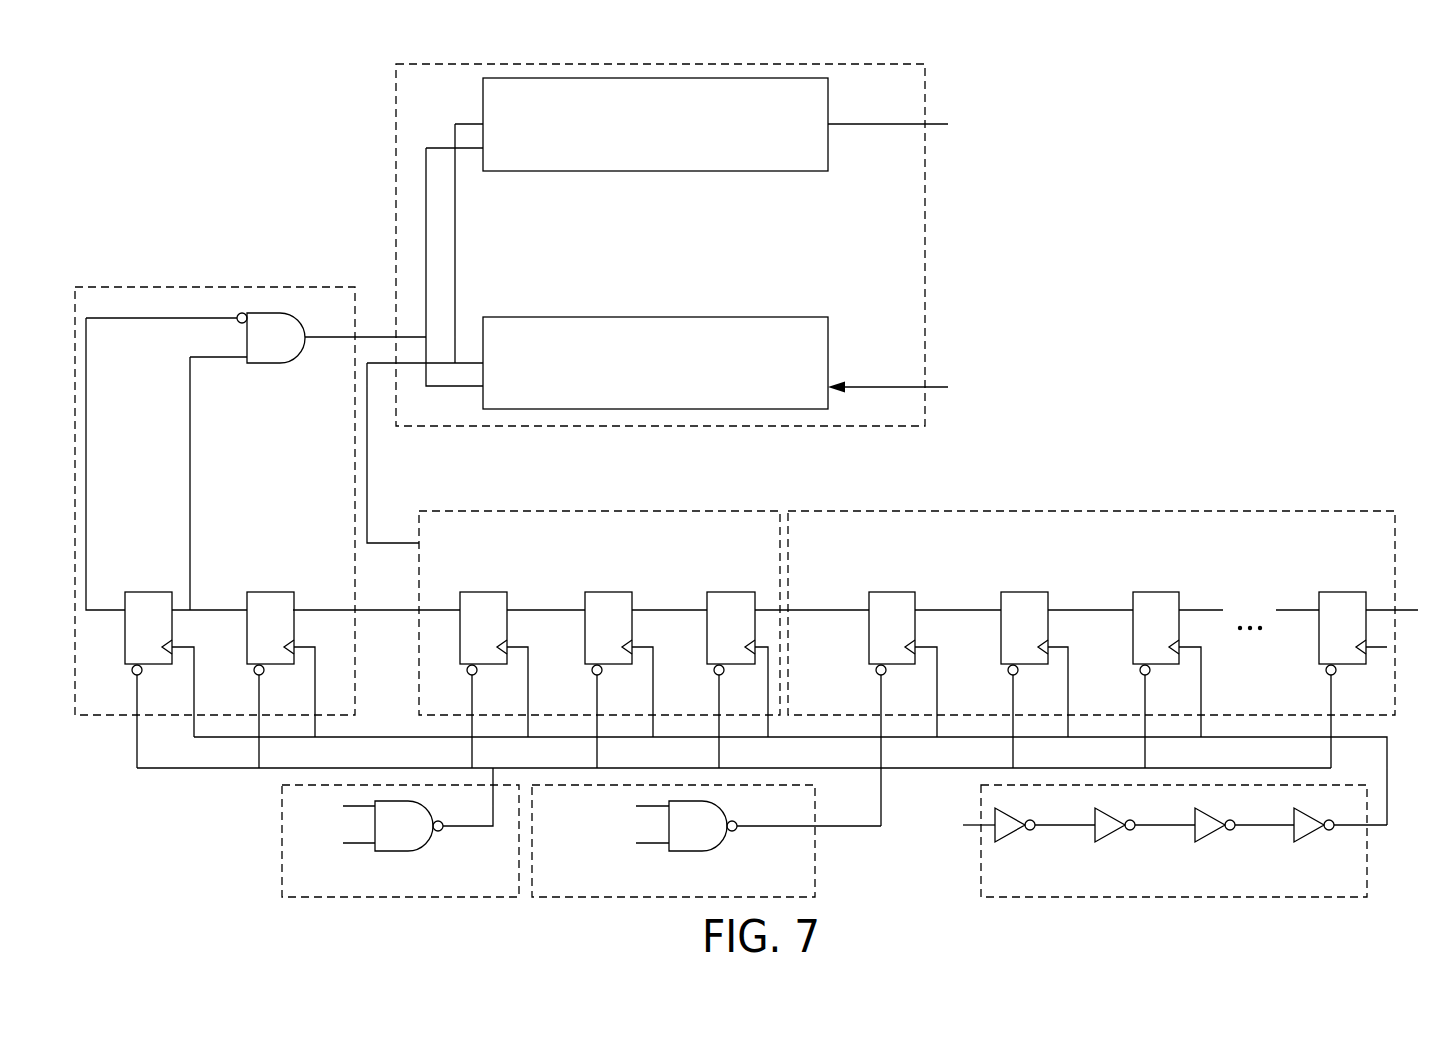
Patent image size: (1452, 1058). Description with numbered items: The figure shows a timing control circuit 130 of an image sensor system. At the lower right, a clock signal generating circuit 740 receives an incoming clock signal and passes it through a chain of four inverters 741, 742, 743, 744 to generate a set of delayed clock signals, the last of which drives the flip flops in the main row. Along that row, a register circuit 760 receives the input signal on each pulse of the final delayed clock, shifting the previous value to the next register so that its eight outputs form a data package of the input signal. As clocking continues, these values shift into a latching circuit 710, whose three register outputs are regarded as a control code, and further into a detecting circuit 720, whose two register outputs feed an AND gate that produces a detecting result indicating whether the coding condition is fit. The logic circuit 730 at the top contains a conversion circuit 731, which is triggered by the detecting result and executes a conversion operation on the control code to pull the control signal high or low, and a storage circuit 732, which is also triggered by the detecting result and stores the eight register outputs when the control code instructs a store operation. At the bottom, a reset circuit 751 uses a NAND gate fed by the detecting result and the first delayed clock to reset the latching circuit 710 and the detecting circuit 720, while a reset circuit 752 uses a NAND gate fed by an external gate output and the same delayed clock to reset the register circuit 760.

The timing control circuit 130 is at (148, 88).
The detecting circuit 720 is at (215, 287).
The logic circuit 730 is at (396, 200).
The conversion circuit 731 is at (828, 150).
The storage circuit 732 is at (830, 335).
The latching circuit 710 is at (443, 511).
The register circuit 760 is at (1354, 510).
The reset circuit 751 is at (282, 863).
The reset circuit 752 is at (815, 872).
The clock signal generating circuit 740 is at (1367, 873).
The inverter 741 is at (1008, 843).
The inverter 742 is at (1108, 843).
The inverter 743 is at (1208, 843).
The inverter 744 is at (1308, 843).